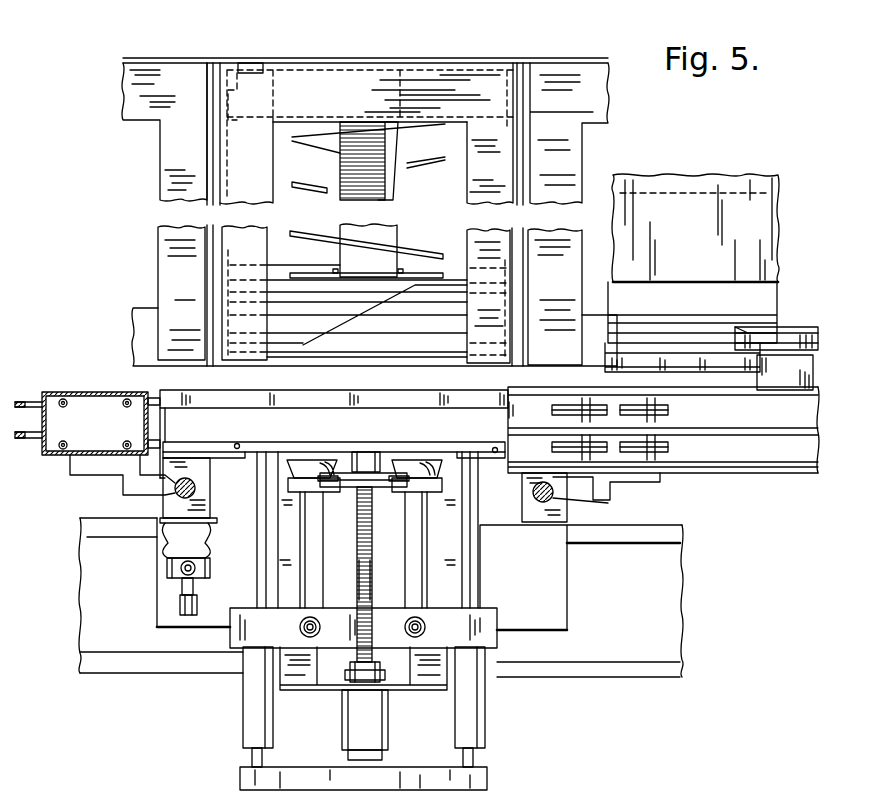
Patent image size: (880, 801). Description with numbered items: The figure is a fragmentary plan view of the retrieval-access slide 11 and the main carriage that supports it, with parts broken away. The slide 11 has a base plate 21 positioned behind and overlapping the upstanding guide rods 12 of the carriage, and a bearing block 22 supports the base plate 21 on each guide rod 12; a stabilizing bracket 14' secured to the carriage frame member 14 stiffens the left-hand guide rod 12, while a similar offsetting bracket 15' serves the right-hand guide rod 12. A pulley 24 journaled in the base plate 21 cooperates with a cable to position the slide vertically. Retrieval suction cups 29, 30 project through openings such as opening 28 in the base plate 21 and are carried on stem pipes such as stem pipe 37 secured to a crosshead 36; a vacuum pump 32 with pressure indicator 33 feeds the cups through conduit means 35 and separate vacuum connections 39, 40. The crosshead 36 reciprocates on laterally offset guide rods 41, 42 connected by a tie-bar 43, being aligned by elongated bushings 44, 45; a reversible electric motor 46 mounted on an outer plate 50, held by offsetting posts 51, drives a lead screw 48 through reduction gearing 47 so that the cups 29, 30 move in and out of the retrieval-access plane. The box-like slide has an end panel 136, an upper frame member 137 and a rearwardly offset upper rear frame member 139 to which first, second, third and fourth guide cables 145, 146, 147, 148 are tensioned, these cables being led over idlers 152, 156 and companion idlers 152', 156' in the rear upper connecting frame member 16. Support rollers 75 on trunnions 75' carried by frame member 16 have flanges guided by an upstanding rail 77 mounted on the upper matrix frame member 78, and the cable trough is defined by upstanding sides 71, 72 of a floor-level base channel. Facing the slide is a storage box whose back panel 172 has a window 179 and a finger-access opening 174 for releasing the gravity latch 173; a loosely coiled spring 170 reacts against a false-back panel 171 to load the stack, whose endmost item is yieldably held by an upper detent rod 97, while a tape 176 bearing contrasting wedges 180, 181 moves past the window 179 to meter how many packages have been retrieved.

The rear panel 172 is at (470, 63).
The window 179 is at (372, 63).
The finger-access opening 174 is at (267, 67).
The latch or dog 173 is at (250, 78).
The contrasting wedge 180 is at (338, 228).
The tape 176 is at (406, 142).
The false-back panel 171 is at (481, 132).
The upper rear frame member 139 is at (378, 400).
The upper detent rod 97 is at (440, 347).
The contrasting wedge 181 is at (393, 227).
The loosely coiled spring 170 is at (420, 253).
The upper frame member 78 is at (633, 293).
The upstanding rail 77 is at (670, 337).
The support rollers 75 is at (776, 319).
The trunnions 75' is at (785, 372).
The rear upper connecting frame member 16 is at (752, 416).
The idler 152 is at (558, 410).
The pulley 156 is at (668, 410).
The lower slot 152' is at (559, 443).
The lower slot clip 156' is at (669, 443).
The end panel 136 is at (167, 430).
The fourth guide cable 148 is at (243, 391).
The third guide cable 147 is at (323, 405).
The second guide cable 146 is at (407, 405).
The first guide cable 145 is at (492, 405).
The upper frame member 137 is at (478, 442).
The retrieval suction cup 29 is at (298, 460).
The retrieval suction cup 30 is at (418, 460).
The base plate 21 is at (340, 447).
The pulley 24 is at (388, 490).
The supporting stem pipe 37 is at (318, 530).
The offsetting posts 51 is at (298, 593).
The lead screw 48 is at (372, 557).
The opening 28 is at (372, 578).
The guide rod 41 is at (258, 589).
The guide rod 42 is at (478, 597).
The carriage frame member 14 is at (87, 405).
The stabilizing bracket 14' is at (109, 480).
The slide 11 is at (221, 463).
The bearing block 22 is at (208, 510).
The guide rod 12 is at (193, 483).
The right mounting bracket 15' is at (633, 488).
The vacuum pump 32 is at (212, 557).
The pressure indicator 33 is at (170, 562).
The conduit means 35 is at (183, 598).
The upstanding side 71 is at (632, 534).
The upstanding side 72 is at (622, 662).
The crosshead 36 is at (498, 623).
The vacuum connection 39 is at (300, 628).
The vacuum connection 40 is at (425, 628).
The reduction gearing 47 is at (391, 675).
The outer plate 50 is at (301, 697).
The reversible electric motor 46 is at (345, 731).
The elongated bushing 44 is at (250, 713).
The elongated bushing 45 is at (482, 720).
The tie-bar 43 is at (421, 774).